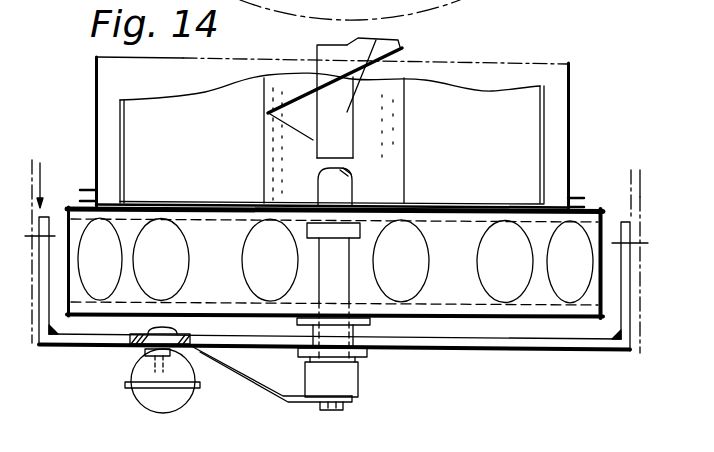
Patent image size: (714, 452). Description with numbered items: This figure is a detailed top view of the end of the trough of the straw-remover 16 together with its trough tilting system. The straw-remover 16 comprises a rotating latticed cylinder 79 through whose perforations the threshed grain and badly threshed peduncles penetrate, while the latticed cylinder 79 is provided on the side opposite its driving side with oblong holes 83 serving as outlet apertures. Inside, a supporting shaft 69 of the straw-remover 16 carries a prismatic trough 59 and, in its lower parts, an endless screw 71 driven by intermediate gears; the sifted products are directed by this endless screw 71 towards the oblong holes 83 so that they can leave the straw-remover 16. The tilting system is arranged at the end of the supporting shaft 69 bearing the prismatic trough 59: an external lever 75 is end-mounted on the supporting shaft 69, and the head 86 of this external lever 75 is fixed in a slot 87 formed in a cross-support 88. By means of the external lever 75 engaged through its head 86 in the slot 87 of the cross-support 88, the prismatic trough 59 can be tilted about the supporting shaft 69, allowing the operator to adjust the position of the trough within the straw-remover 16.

The straw-remover 16 is at (473, 77).
The prismatic trough 59 is at (332, 138).
The supporting shaft 69 is at (340, 189).
The endless screw 71 is at (309, 103).
The external lever 75 is at (262, 386).
The latticed cylinder 79 is at (570, 103).
The oblong holes 83 is at (245, 268).
The head 86 is at (158, 366).
The slot 87 is at (140, 340).
The cross-support 88 is at (478, 345).